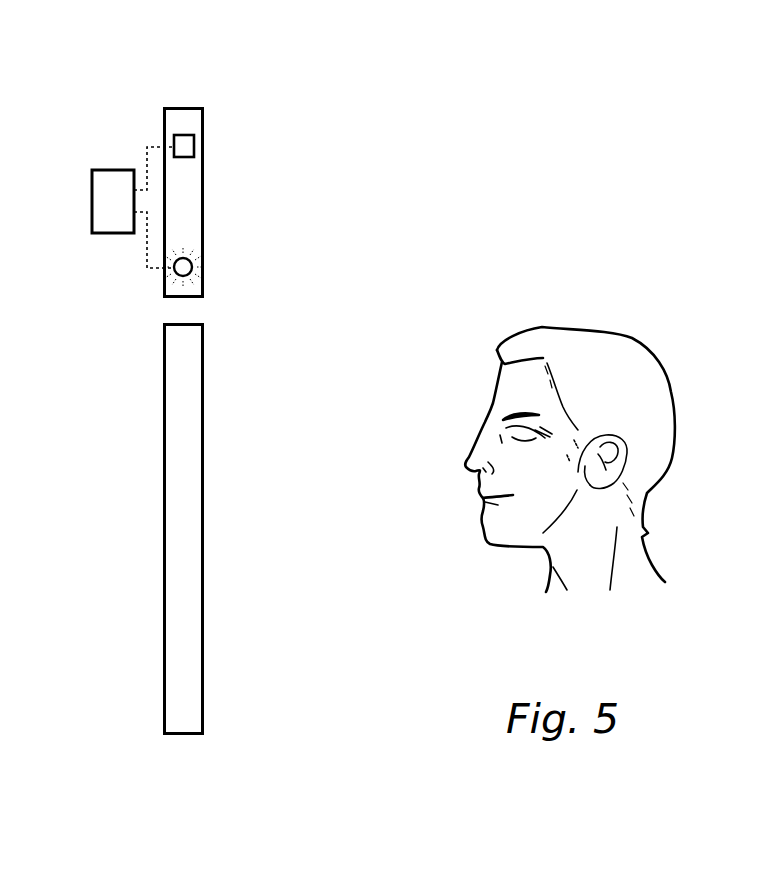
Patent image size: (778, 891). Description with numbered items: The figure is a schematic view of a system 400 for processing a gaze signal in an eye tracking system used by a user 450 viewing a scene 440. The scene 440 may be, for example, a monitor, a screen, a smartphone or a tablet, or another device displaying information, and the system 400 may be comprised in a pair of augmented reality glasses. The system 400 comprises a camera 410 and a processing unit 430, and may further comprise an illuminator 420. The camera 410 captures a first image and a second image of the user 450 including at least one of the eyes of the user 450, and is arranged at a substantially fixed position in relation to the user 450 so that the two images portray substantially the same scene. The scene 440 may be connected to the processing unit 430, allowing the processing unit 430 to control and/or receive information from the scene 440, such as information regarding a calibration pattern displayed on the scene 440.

The system 400 is at (112, 85).
The camera 410 is at (194, 147).
The illuminator 420 is at (163, 273).
The processing unit 430 is at (112, 169).
The scene 440 is at (163, 392).
The user 450 is at (627, 365).